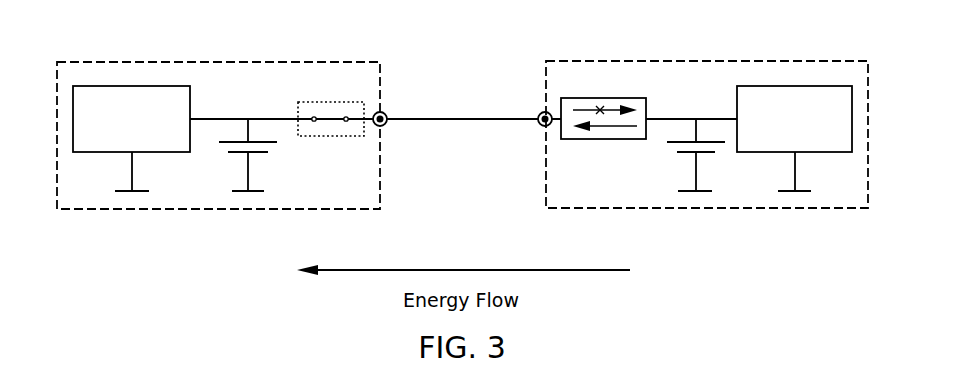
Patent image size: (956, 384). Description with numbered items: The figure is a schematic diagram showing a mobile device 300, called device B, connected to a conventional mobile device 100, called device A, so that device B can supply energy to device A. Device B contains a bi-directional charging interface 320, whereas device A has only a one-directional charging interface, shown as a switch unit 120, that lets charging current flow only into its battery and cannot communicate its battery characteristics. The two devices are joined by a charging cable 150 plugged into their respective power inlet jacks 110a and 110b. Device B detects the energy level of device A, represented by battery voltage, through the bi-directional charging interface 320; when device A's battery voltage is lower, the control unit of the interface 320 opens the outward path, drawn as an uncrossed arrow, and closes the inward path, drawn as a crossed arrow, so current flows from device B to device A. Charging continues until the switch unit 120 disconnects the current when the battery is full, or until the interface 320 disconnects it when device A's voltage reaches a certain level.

The mobile device 100 is at (232, 61).
The power inlet jack 110a is at (383, 111).
The power inlet jack 110b is at (541, 111).
The switch unit 120 is at (332, 137).
The charging cable 150 is at (430, 120).
The mobile device 300 is at (721, 60).
The bi-directional charging interface 320 is at (639, 98).